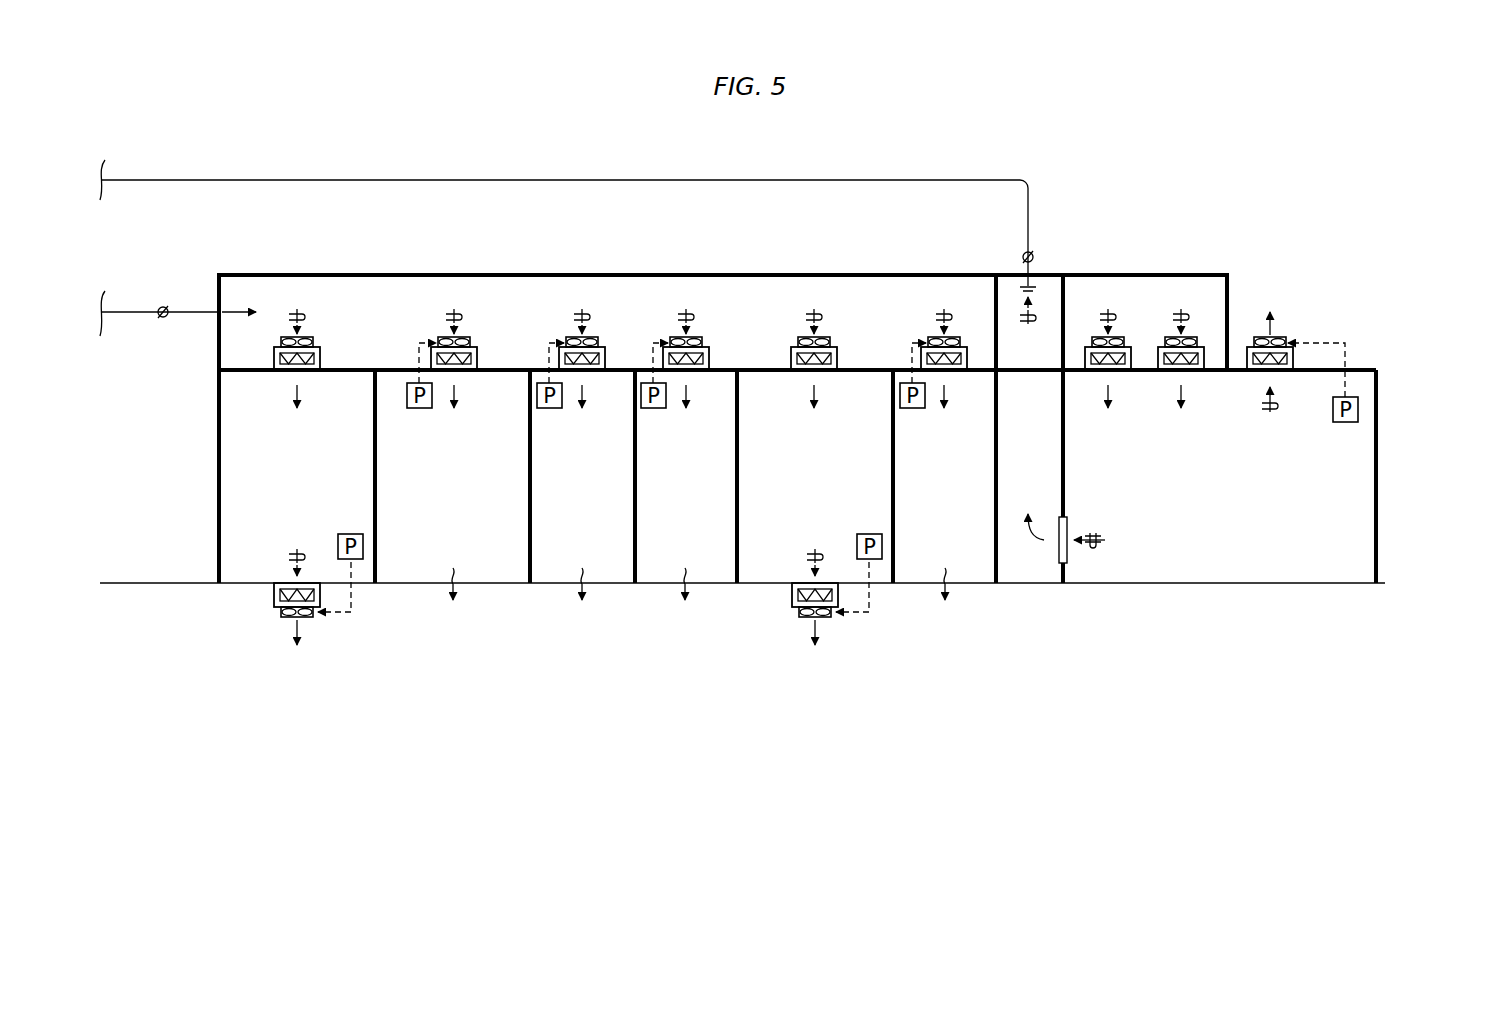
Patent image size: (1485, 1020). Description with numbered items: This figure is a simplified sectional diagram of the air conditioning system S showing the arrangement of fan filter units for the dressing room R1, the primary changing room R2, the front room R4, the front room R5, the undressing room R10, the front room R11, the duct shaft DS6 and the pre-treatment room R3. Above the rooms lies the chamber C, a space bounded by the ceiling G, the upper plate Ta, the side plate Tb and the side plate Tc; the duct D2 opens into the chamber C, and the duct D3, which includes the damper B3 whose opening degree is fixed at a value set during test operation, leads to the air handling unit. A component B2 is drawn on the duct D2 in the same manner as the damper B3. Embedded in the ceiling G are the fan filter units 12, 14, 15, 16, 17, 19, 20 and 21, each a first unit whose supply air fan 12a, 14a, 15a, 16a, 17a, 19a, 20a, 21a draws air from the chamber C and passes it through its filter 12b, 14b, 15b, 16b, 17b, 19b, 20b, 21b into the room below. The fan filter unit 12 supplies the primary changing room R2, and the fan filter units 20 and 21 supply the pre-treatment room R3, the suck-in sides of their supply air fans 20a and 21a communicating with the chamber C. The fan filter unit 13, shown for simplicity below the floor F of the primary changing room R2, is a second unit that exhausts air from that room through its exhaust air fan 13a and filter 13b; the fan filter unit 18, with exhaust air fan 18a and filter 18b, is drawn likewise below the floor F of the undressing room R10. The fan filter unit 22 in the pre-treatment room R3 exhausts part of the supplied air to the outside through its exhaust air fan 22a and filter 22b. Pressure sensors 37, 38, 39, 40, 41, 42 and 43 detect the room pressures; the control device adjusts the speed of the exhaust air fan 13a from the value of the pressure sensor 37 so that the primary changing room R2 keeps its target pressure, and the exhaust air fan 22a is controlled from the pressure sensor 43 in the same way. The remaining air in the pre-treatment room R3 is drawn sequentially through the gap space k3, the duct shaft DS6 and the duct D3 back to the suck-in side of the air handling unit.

The fan filter unit (first unit) 12 is at (293, 366).
The supply air fan (first fan) 12a is at (289, 336).
The filter (first filter) 12b is at (320, 362).
The fan filter unit (second unit) 13 is at (249, 621).
The exhaust air fan (second fan) 13a is at (289, 621).
The filter (second filter) 13b is at (272, 593).
The fan filter unit (first unit) 14 is at (449, 366).
The supply air fan (first fan) 14a is at (446, 336).
The filter (first filter) 14b is at (477, 362).
The fan filter unit (first unit) 15 is at (574, 366).
The supply air fan (first fan) 15a is at (574, 336).
The filter (first filter) 15b is at (605, 362).
The fan filter unit (first unit) 16 is at (677, 366).
The supply air fan (first fan) 16a is at (678, 336).
The filter (first filter) 16b is at (709, 362).
The fan filter unit (first unit) 17 is at (800, 366).
The supply air fan (first fan) 17a is at (822, 336).
The filter (first filter) 17b is at (837, 362).
The fan filter unit (second unit) 18 is at (766, 621).
The exhaust air fan (second fan) 18a is at (806, 621).
The filter (second filter) 18b is at (790, 593).
The fan filter unit (first unit) 19 is at (936, 366).
The supply air fan (first fan) 19a is at (936, 336).
The filter (first filter) 19b is at (967, 362).
The fan filter unit (first unit) 20 is at (1113, 343).
The supply air fan (first fan) 20a is at (1099, 336).
The filter (first filter) 20b is at (1131, 362).
The fan filter unit (first unit) 21 is at (1181, 366).
The supply air fan (first fan) 21a is at (1173, 336).
The filter (first filter) 21b is at (1204, 362).
The fan filter unit (second unit) 22 is at (1299, 357).
The exhaust air fan (second fan) 22a is at (1283, 323).
The filter (second filter) 22b is at (1293, 362).
The pressure sensor 37 is at (351, 533).
The pressure sensor 38 is at (419, 409).
The pressure sensor 39 is at (549, 409).
The pressure sensor 40 is at (653, 409).
The pressure sensor 41 is at (868, 533).
The pressure sensor 42 is at (912, 409).
The pressure sensor 43 is at (1346, 423).
The duct D2 is at (137, 312).
The duct D3 is at (612, 180).
The damper B2 is at (160, 319).
The damper B3 is at (1034, 257).
The upper plate Ta is at (303, 275).
The side plate Tb is at (219, 292).
The side plate Tc is at (1228, 276).
The air conditioning system S is at (1183, 182).
The chamber C is at (352, 328).
The ceiling G is at (352, 369).
The floor F is at (420, 586).
The gap space k3 is at (1067, 533).
The dressing room (clean room) R1 is at (444, 490).
The primary changing room (clean room) R2 is at (280, 490).
The pre-treatment room (clean room) R3 is at (1207, 490).
The front room (clean room) R4 is at (569, 490).
The front room (clean room) R5 is at (673, 490).
The undressing room (clean room) R10 is at (788, 490).
The front room (clean room) R11 is at (922, 490).
The duct shaft DS6 is at (1004, 490).